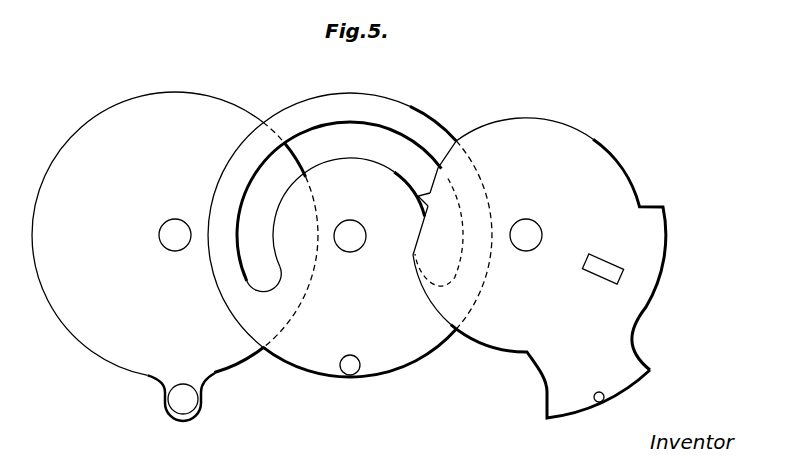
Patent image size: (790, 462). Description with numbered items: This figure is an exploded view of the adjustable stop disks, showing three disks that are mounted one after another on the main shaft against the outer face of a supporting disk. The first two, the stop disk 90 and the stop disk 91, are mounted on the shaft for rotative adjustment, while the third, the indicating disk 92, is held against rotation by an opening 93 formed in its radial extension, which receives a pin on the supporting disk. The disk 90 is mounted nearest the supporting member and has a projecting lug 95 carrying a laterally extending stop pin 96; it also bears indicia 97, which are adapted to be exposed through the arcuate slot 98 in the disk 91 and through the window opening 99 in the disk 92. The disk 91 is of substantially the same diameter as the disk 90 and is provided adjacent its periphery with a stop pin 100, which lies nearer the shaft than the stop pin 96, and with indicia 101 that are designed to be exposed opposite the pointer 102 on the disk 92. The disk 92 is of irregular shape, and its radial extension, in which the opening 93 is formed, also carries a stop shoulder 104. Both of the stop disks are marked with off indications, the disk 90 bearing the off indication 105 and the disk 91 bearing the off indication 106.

The stop disk 90 is at (207, 112).
The stop disk 91 is at (325, 344).
The indicating disk 92 is at (600, 158).
The opening 93 is at (600, 392).
The projecting lug 95 is at (165, 385).
The stop pin 96 is at (196, 400).
The indicia 97 is at (97, 190).
The arcuate slot 98 is at (397, 133).
The window opening 99 is at (606, 266).
The stop pin 100 is at (355, 372).
The indicia 101 is at (436, 348).
The pointer 102 is at (420, 194).
The stop shoulder 104 is at (546, 393).
The off indication 105 is at (252, 268).
The off indication 106 is at (245, 186).